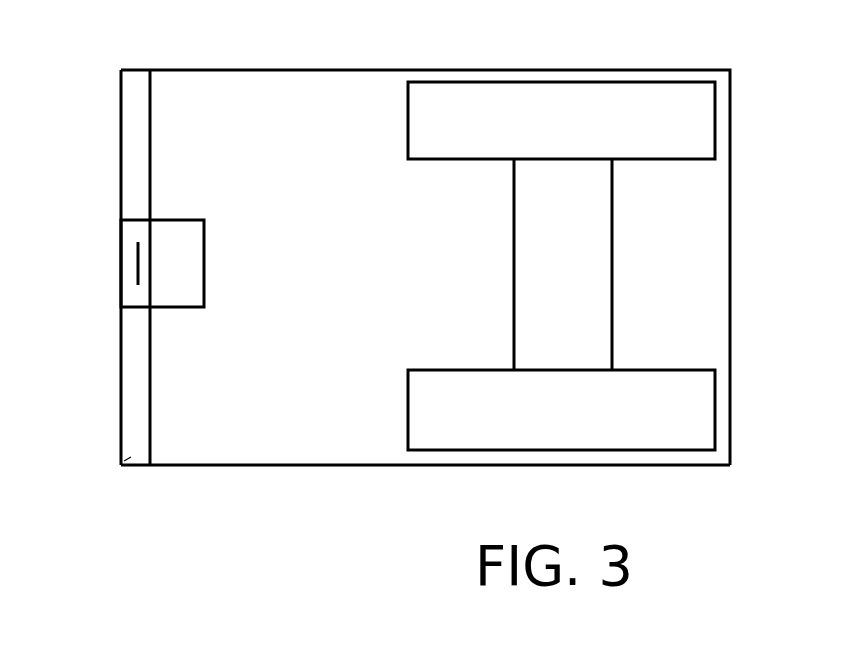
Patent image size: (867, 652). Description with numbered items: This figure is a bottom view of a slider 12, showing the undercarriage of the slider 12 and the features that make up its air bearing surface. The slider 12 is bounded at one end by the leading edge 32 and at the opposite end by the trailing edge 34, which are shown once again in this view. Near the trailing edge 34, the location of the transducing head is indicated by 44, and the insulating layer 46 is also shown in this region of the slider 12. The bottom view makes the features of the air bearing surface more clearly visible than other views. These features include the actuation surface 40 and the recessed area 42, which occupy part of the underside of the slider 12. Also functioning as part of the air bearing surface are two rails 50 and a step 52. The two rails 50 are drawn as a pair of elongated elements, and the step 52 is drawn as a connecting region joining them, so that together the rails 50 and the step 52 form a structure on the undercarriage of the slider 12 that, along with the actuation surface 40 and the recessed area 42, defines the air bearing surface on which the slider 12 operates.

The slider 12 is at (299, 466).
The leading edge 32 is at (419, 277).
The trailing edge 34 is at (98, 388).
The actuation surface 40 is at (191, 267).
The recessed area 42 is at (283, 97).
The location of the transducing head 44 is at (137, 252).
The insulating layer 46 is at (121, 465).
The rails 50 is at (590, 92).
The step 52 is at (572, 266).